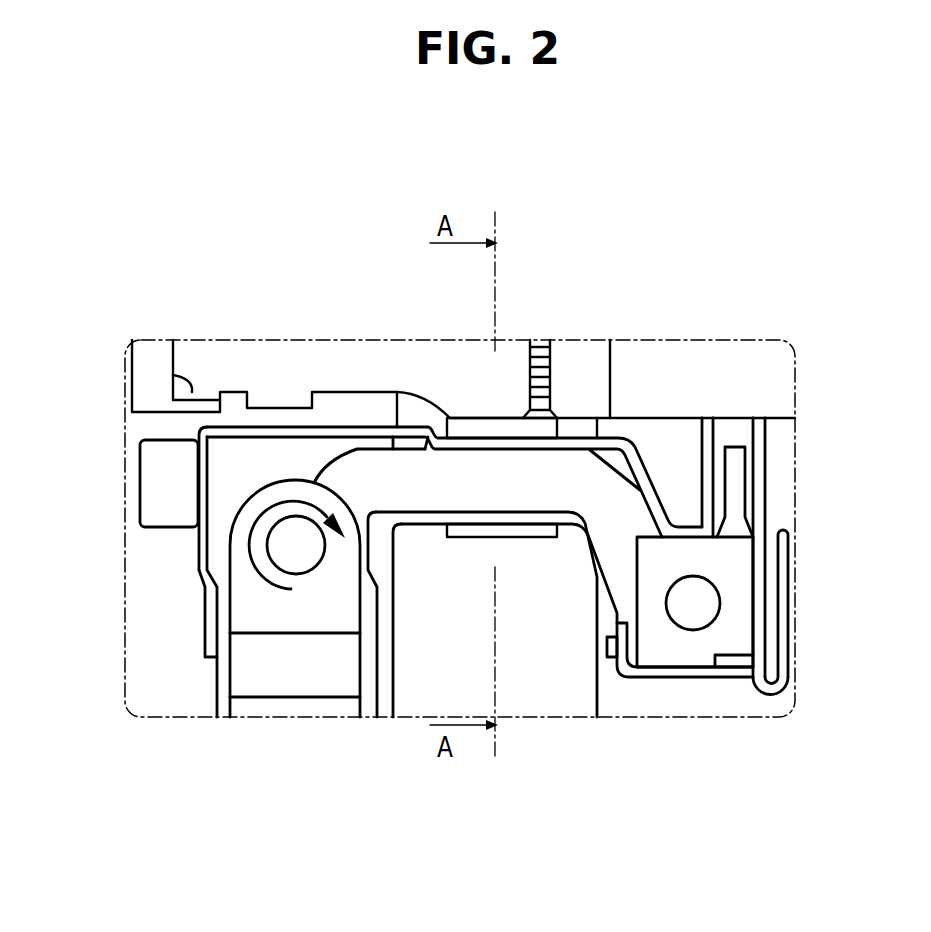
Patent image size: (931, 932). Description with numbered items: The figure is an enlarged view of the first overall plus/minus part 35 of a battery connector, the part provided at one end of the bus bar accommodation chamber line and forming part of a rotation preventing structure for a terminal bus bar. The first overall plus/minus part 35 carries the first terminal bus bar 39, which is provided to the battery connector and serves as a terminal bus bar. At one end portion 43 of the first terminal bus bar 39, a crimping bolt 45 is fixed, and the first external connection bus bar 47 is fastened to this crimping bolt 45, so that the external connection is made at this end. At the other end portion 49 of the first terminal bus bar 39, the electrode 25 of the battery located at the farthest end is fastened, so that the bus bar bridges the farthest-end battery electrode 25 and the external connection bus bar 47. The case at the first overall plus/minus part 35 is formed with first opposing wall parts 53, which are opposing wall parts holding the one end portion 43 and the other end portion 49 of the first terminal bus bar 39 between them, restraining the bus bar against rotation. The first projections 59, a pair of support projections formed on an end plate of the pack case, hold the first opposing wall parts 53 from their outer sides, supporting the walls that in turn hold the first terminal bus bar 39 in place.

The electrode 25 is at (697, 608).
The first overall plus/minus part 35 is at (273, 737).
The first terminal bus bar 39 is at (355, 442).
The one end portion 43 is at (343, 473).
The crimping bolt 45 is at (300, 550).
The first external connection bus bar 47 is at (242, 598).
The other end portion 49 is at (643, 510).
The first opposing wall parts 53 is at (560, 510).
The first projections 59 is at (480, 418).